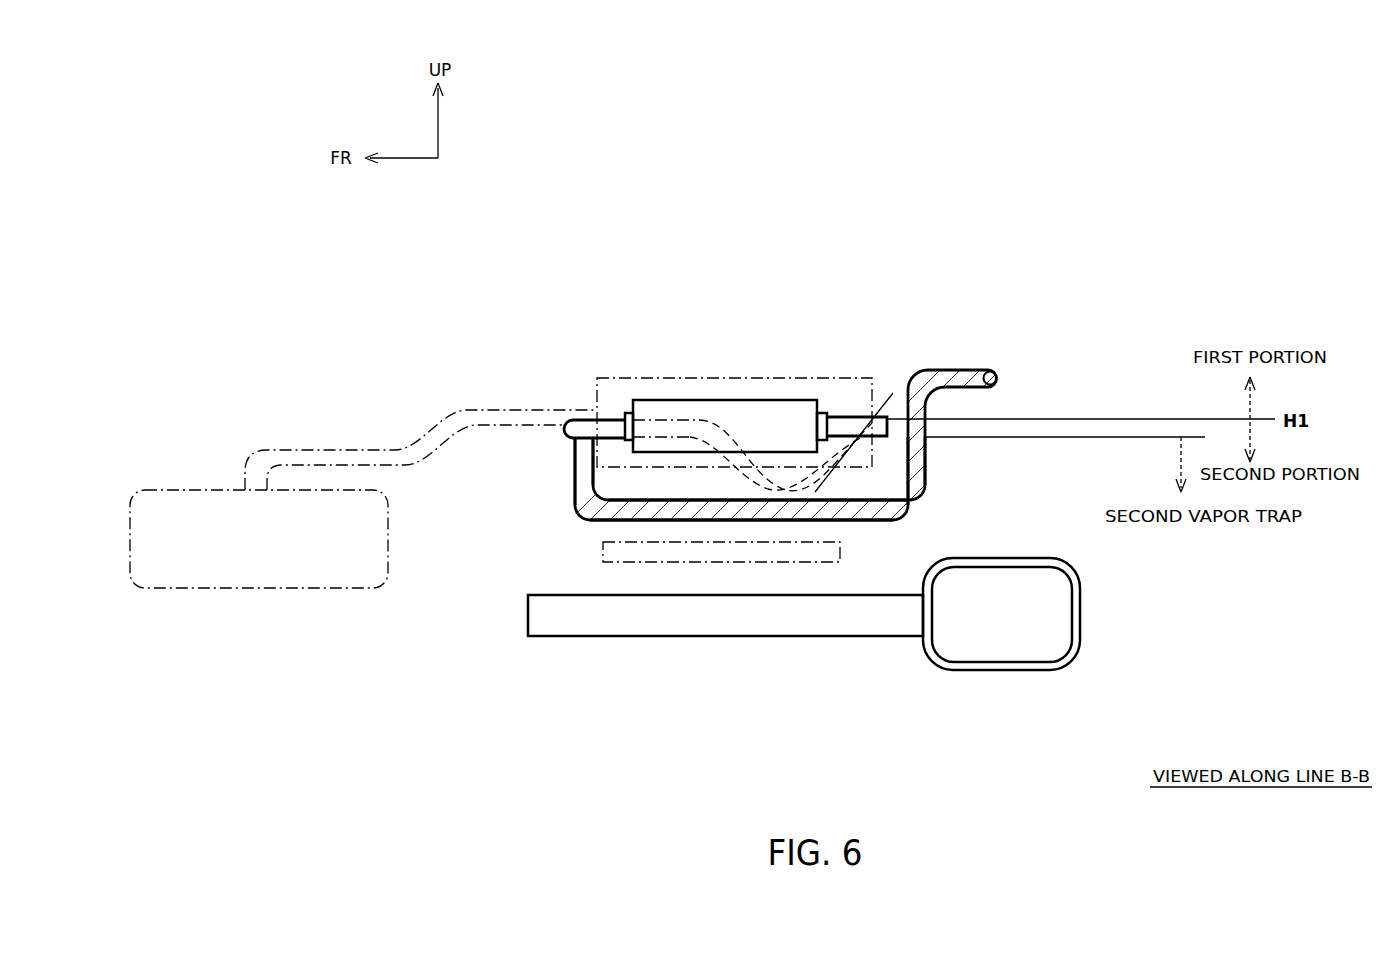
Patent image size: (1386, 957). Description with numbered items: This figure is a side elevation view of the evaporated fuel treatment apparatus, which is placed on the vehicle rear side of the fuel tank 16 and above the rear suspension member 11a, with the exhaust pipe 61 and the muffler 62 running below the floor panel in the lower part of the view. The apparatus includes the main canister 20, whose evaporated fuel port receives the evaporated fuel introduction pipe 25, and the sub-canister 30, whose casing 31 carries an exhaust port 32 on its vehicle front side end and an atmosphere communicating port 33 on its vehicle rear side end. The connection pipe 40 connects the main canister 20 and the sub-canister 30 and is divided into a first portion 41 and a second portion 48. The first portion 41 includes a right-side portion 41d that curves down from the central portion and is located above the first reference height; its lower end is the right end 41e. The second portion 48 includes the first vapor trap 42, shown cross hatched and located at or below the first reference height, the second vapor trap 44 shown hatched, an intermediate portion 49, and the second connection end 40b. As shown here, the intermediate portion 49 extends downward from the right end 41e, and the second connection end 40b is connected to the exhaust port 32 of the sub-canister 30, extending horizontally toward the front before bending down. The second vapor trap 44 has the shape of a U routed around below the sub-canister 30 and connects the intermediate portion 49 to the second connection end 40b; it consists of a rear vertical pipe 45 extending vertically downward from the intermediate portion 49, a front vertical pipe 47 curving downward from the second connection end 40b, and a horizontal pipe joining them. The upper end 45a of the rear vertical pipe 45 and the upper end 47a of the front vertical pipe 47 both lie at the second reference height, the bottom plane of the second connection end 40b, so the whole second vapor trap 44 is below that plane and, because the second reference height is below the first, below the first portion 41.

The fuel tank 16 is at (185, 490).
The evaporated fuel introduction pipe 25 is at (375, 450).
The second connection end 40b is at (605, 418).
The exhaust port 32 is at (627, 410).
The atmosphere communicating port 33 is at (907, 383).
The main canister 20 is at (640, 378).
The sub-canister 30 is at (752, 398).
The casing 31 is at (698, 398).
The first vapor trap 42 is at (752, 475).
The connection pipe 40 is at (855, 522).
The right-side portion 41d is at (912, 382).
The first portion 41 is at (998, 379).
The right end 41e is at (955, 405).
The intermediate portion 49 is at (927, 437).
The rear vertical pipe 45 is at (928, 502).
The upper end 45a is at (932, 438).
The second vapor trap 44 is at (778, 522).
The second portion 48 is at (897, 522).
The front vertical pipe 47 is at (576, 452).
The upper end 47a is at (570, 440).
The rear suspension member 11a is at (617, 563).
The exhaust pipe 61 is at (640, 636).
The muffler 62 is at (1000, 672).